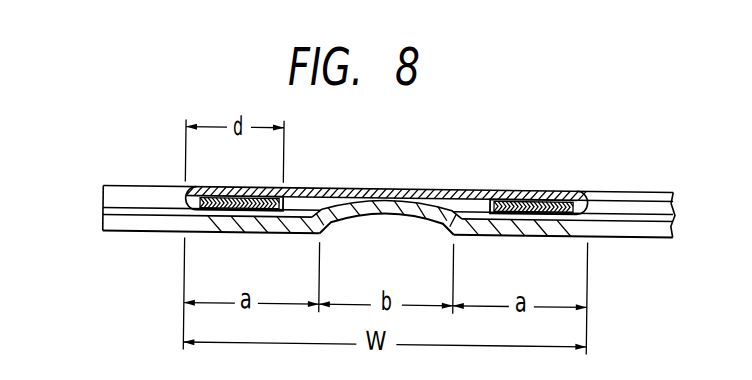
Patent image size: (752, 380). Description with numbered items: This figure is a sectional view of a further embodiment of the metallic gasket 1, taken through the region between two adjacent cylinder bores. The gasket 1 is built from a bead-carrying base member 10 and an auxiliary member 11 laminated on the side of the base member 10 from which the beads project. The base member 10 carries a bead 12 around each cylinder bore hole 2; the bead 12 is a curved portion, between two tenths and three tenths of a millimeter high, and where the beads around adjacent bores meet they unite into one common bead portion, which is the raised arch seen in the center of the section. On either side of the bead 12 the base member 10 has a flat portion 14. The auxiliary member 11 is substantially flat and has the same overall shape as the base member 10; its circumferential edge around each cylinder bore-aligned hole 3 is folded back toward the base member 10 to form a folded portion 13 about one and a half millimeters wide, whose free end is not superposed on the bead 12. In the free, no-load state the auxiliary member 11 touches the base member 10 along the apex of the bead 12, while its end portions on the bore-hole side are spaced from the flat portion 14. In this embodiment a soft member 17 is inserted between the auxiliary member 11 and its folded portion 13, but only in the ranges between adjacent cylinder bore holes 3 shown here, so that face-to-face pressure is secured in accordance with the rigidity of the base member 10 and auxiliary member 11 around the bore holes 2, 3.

The metallic gasket 1 is at (404, 188).
The cylinder bore hole 2 is at (189, 223).
The cylinder bore-aligned hole 3 is at (187, 204).
The bead-carrying base member 10 is at (482, 238).
The auxiliary member 11 is at (457, 190).
The bead 12 is at (400, 209).
The folded portion 13 is at (215, 204).
The flat portion 14 is at (233, 228).
The soft member 17 is at (244, 202).